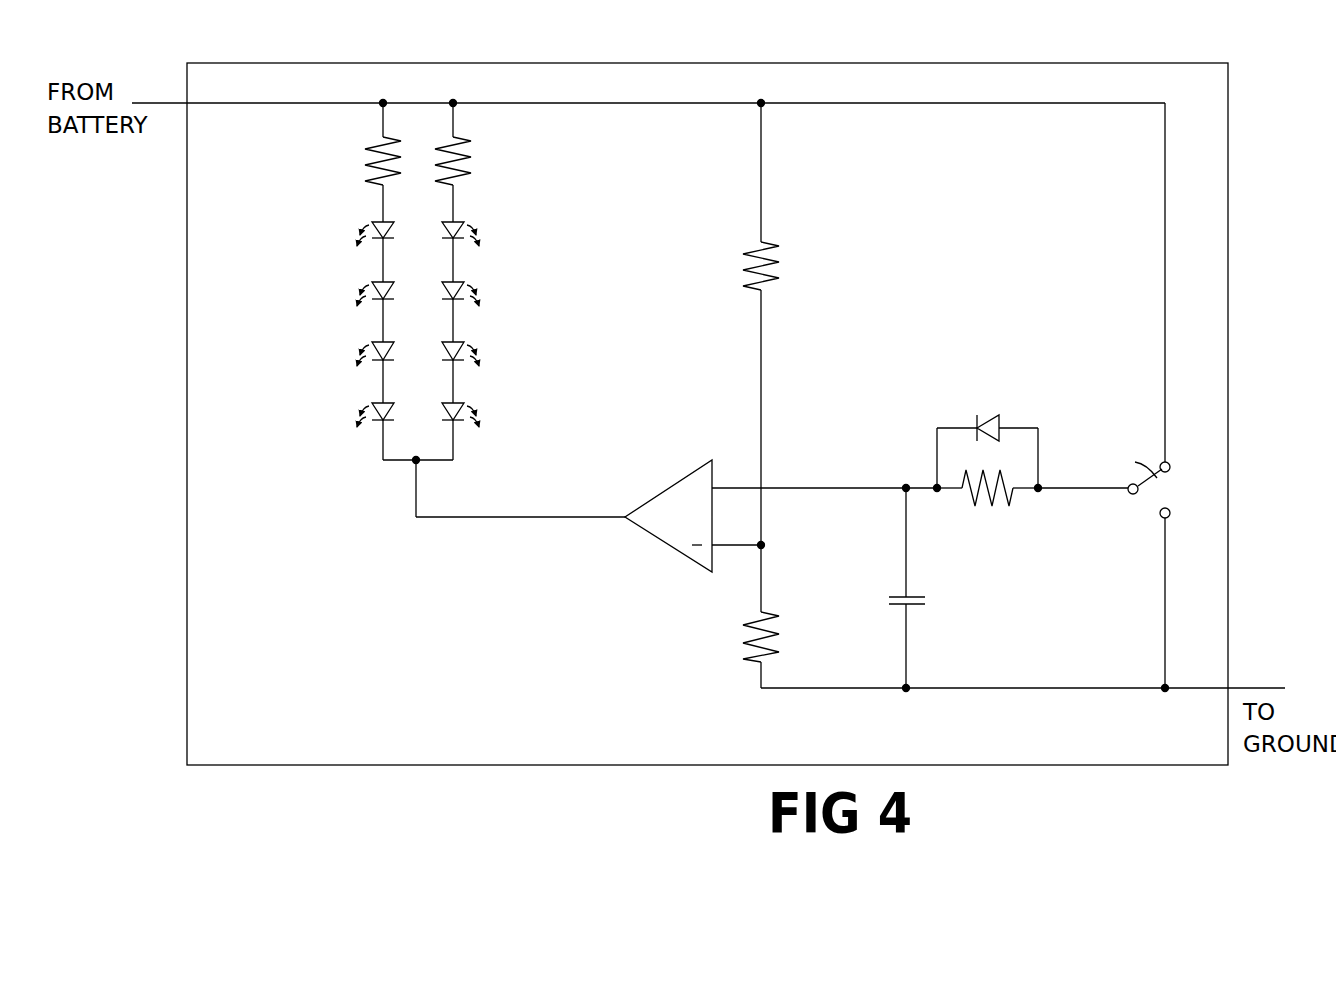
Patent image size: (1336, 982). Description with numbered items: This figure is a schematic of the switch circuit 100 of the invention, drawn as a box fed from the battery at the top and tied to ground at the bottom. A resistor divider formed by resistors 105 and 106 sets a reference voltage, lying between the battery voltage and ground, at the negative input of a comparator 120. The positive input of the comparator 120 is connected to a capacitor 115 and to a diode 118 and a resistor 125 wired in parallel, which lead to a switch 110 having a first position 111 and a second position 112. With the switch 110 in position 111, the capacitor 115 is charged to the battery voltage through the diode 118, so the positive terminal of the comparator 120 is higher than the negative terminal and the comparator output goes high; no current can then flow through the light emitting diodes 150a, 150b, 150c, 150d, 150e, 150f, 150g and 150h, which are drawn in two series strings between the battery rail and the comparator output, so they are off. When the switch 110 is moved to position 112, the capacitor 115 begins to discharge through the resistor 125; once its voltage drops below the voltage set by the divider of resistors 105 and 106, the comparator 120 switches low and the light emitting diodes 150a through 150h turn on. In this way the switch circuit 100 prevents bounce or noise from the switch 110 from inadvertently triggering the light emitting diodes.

The switch circuit 100 is at (940, 750).
The resistor 105 is at (780, 245).
The resistor 106 is at (745, 626).
The switch 110 is at (1160, 490).
The switch position 111 is at (1172, 467).
The switch position 112 is at (1159, 513).
The capacitor 115 is at (925, 604).
The diode 118 is at (1000, 413).
The comparator 120 is at (672, 505).
The resistor 125 is at (997, 511).
The light emitting diode 150a is at (371, 222).
The light emitting diode 150b is at (461, 222).
The light emitting diode 150c is at (371, 283).
The light emitting diode 150d is at (461, 283).
The light emitting diode 150e is at (371, 343).
The light emitting diode 150f is at (461, 343).
The light emitting diode 150g is at (371, 404).
The light emitting diode 150h is at (461, 404).